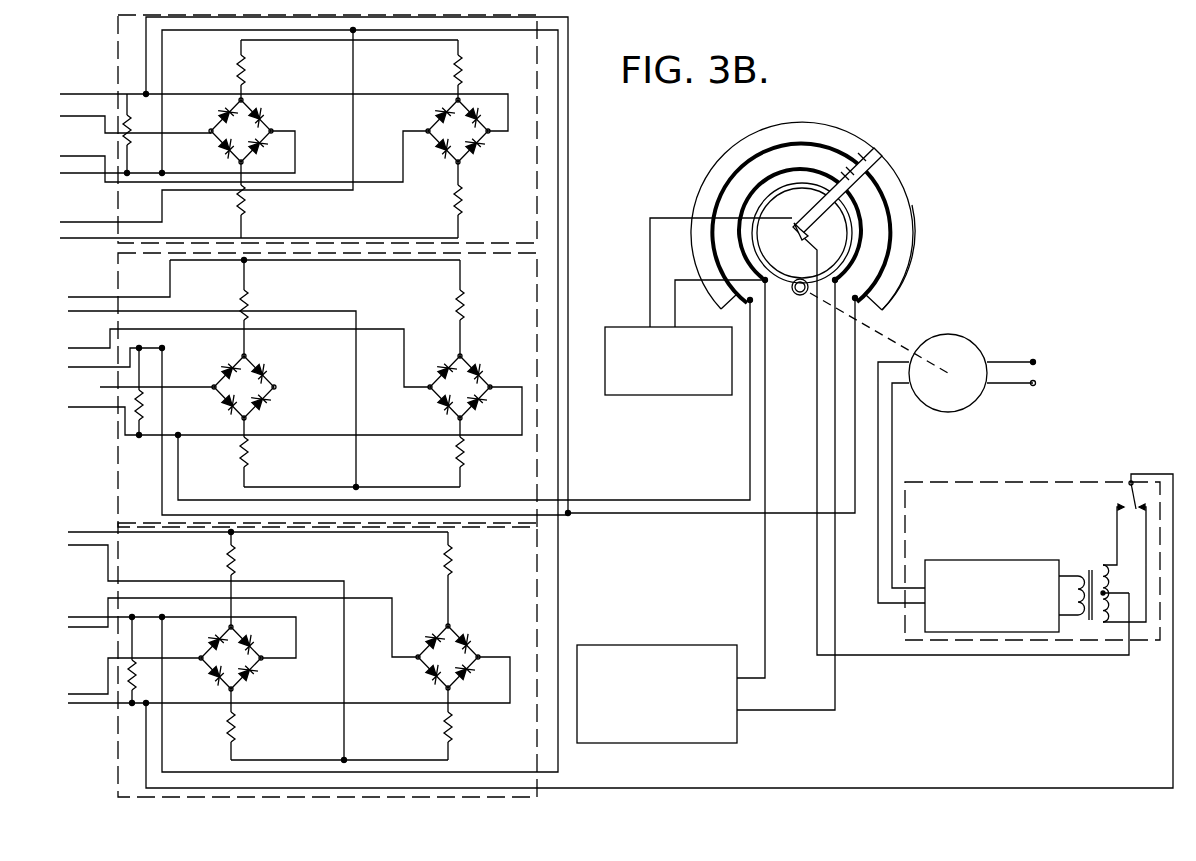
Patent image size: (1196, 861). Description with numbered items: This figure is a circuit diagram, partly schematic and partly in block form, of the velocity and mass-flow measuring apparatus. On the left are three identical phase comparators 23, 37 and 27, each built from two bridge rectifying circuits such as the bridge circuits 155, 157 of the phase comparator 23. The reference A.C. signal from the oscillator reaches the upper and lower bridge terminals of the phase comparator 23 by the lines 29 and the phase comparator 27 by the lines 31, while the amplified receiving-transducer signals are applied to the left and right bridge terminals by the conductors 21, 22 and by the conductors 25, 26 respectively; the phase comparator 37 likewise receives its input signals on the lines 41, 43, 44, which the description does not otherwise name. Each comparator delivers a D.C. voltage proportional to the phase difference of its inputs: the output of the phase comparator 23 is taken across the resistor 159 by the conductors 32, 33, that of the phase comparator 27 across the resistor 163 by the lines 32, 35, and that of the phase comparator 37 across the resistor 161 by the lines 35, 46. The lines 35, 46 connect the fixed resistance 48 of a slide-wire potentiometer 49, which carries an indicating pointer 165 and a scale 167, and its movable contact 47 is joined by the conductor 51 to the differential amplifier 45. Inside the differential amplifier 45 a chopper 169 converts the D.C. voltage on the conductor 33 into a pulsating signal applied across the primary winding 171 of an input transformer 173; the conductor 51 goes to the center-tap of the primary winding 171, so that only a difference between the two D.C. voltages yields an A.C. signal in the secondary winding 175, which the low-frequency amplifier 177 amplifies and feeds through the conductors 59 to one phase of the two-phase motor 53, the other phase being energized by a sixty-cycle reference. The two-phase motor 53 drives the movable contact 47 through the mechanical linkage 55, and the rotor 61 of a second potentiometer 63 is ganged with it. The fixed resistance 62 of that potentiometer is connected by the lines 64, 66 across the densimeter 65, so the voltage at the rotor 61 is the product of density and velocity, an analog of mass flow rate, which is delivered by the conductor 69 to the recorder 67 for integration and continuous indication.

The conductors 21 is at (92, 705).
The conductors 22 is at (98, 624).
The phase comparator 23 is at (118, 770).
The conductors 25 is at (78, 115).
The conductors 26 is at (93, 173).
The phase comparator 27 is at (118, 52).
The lines 29 is at (92, 544).
The lines 31 is at (92, 222).
The conductor 32 is at (162, 161).
The conductor 33 is at (146, 745).
The conductor 35 is at (147, 61).
The phase comparator 37 is at (118, 485).
The input lead 41 is at (89, 388).
The input lead 43 is at (94, 297).
The input lead 44 is at (93, 346).
The differential amplifier 45 is at (905, 632).
The conductor 46 is at (186, 466).
The movable contact 47 is at (842, 172).
The fixed resistance 48 is at (775, 140).
The potentiometer 49 is at (872, 150).
The conductor 51 is at (817, 312).
The two-phase motor 53 is at (975, 342).
The mechanical linkage 55 is at (872, 332).
The conductors 59 is at (880, 429).
The rotor 61 is at (818, 196).
The fixed resistance 62 is at (742, 269).
The potentiometer 63 is at (802, 233).
The line 64 is at (835, 357).
The densimeter 65 is at (665, 743).
The line 66 is at (765, 548).
The recorder 67 is at (680, 399).
The conductor 69 is at (650, 218).
The bridge rectifying circuit 155 is at (256, 668).
The bridge rectifying circuit 157 is at (480, 646).
The resistor 159 is at (150, 684).
The resistor 161 is at (148, 414).
The resistor 163 is at (129, 114).
The indicating pointer 165 is at (868, 156).
The scale 167 is at (912, 205).
The chopper 169 is at (1125, 497).
The primary winding 171 is at (1105, 565).
The input transformer 173 is at (1090, 568).
The secondary winding 175 is at (1070, 617).
The low-frequency amplifier 177 is at (975, 560).